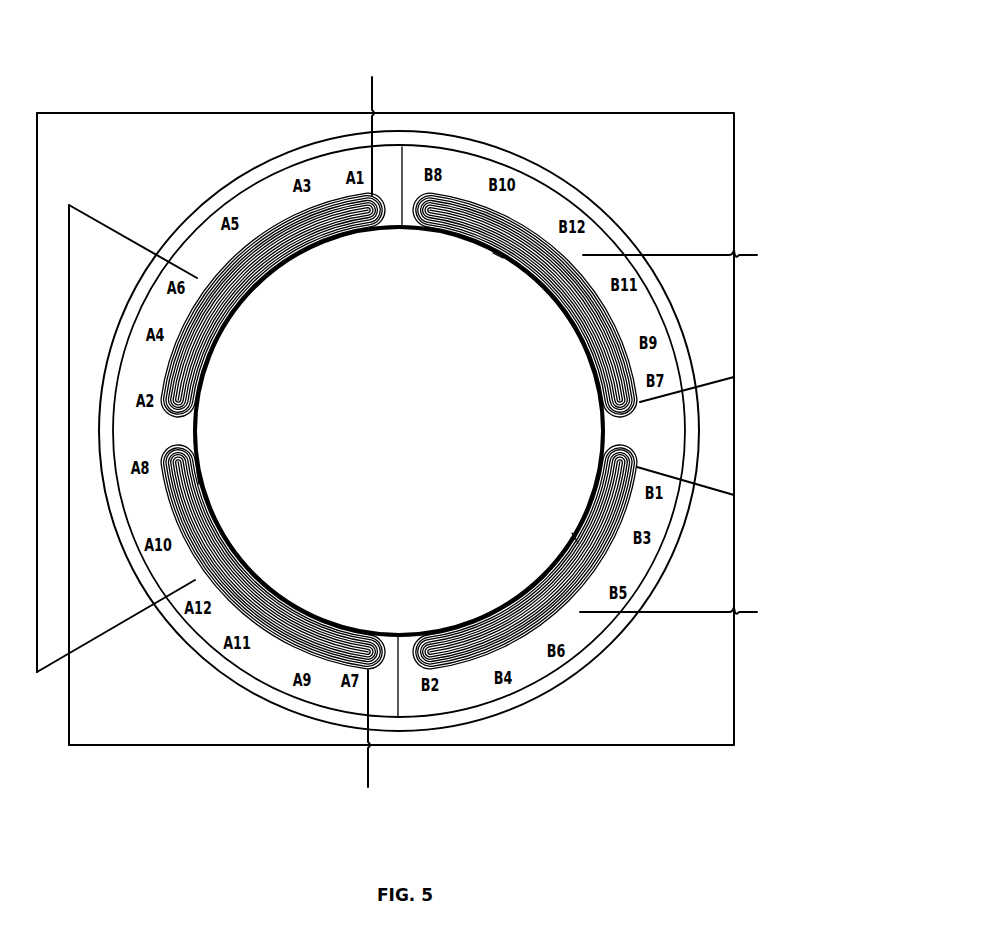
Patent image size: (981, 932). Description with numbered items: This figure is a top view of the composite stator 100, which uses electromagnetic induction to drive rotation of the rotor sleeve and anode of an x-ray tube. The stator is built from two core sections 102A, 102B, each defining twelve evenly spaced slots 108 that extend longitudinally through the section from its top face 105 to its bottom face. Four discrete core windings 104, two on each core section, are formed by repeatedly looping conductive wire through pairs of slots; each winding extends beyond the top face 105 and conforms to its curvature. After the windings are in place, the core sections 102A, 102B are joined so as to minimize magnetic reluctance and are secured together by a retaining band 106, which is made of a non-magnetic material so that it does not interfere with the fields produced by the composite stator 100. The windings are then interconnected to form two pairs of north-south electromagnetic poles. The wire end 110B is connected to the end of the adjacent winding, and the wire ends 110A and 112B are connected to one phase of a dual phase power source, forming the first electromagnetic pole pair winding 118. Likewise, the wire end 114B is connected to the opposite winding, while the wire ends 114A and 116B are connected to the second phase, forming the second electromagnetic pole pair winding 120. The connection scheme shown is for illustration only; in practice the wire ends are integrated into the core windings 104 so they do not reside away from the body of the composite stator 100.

The composite stator 100 is at (212, 80).
The core section 102A is at (119, 353).
The core section 102B is at (688, 433).
The core windings 104 is at (256, 286).
The top face 105 is at (262, 200).
The retaining band 106 is at (557, 688).
The slots 108 is at (195, 440).
The second end of wire 110A is at (371, 109).
The final end of wire 110B is at (101, 222).
The wire end 112B is at (711, 558).
The wire end 114A is at (367, 754).
The wire end 114B is at (102, 636).
The wire end 116B is at (714, 324).
The first electromagnetic pole pair winding 118 is at (346, 233).
The second electromagnetic pole pair winding 120 is at (497, 255).